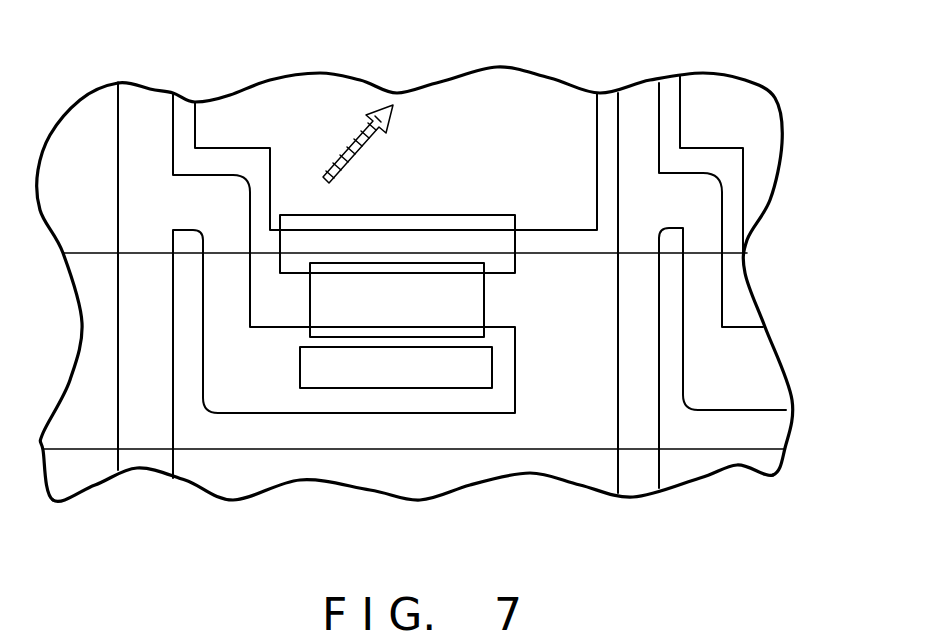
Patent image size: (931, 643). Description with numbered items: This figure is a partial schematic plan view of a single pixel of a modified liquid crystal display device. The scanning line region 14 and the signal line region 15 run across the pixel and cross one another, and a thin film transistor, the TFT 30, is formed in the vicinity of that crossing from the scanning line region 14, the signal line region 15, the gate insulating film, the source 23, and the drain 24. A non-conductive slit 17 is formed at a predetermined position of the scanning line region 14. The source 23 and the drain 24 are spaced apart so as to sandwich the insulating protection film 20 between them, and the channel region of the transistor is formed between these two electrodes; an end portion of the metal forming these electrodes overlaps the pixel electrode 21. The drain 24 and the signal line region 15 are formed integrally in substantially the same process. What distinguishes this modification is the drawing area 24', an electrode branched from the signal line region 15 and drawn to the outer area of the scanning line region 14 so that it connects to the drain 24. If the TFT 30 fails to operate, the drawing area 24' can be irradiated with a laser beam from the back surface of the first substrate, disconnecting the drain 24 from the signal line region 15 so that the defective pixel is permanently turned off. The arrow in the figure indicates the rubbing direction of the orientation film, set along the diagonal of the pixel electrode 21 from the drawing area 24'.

The scanning line region 14 is at (770, 386).
The signal line region 15 is at (145, 460).
The slit 17 is at (305, 370).
The insulating protection film 20 is at (310, 302).
The pixel electrode 21 is at (208, 131).
The source 23 is at (508, 222).
The drain 24 is at (479, 285).
The drawing area 24' is at (343, 288).
The TFT 30 is at (415, 503).